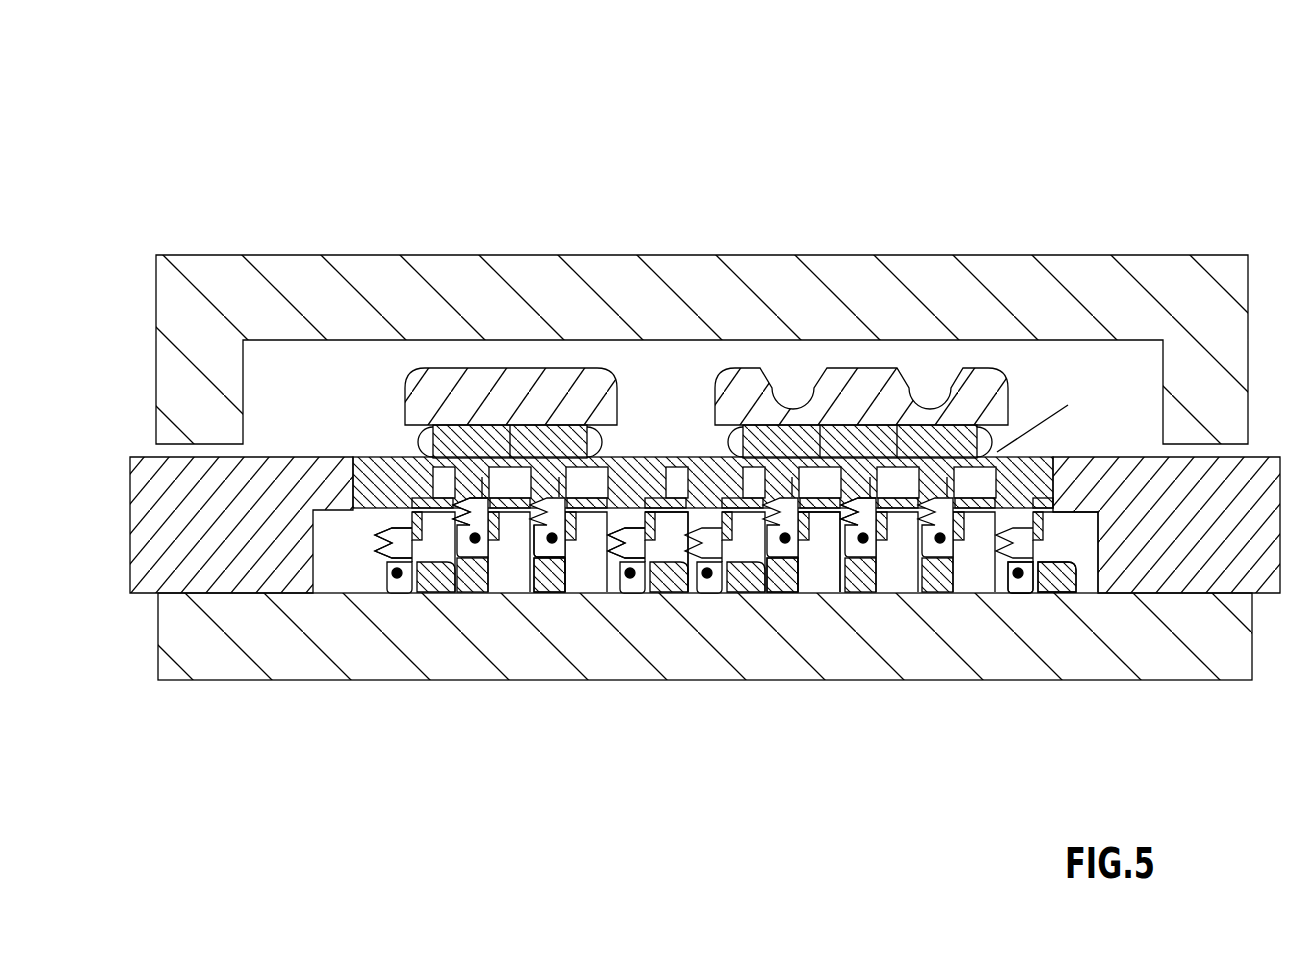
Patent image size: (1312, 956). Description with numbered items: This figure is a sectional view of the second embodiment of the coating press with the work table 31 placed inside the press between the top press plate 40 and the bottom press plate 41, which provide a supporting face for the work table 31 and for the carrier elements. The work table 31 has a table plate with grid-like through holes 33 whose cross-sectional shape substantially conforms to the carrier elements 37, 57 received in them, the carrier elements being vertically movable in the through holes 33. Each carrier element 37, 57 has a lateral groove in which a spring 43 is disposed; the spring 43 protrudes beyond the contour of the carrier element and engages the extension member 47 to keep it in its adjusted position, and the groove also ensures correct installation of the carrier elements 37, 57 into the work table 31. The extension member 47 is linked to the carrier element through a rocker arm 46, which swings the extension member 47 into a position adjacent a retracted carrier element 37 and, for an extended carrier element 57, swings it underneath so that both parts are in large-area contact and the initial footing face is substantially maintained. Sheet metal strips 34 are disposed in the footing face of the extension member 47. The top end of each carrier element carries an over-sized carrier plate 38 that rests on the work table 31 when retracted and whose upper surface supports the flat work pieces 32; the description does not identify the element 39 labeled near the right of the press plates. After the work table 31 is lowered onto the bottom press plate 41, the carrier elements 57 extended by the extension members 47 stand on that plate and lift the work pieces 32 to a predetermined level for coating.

The work table 31 is at (245, 530).
The work piece 32 is at (748, 395).
The through hole 33 is at (680, 527).
The sheet metal strip 34 is at (538, 585).
The carrier element 37 is at (390, 555).
The carrier plate 38 is at (533, 500).
The foil 39 is at (1068, 405).
The top press plate 40 is at (1212, 283).
The bottom press plate 41 is at (1219, 645).
The spring 43 is at (842, 575).
The rocker arm 46 is at (1010, 597).
The extension member 47 is at (777, 575).
The carrier element 57 is at (463, 520).